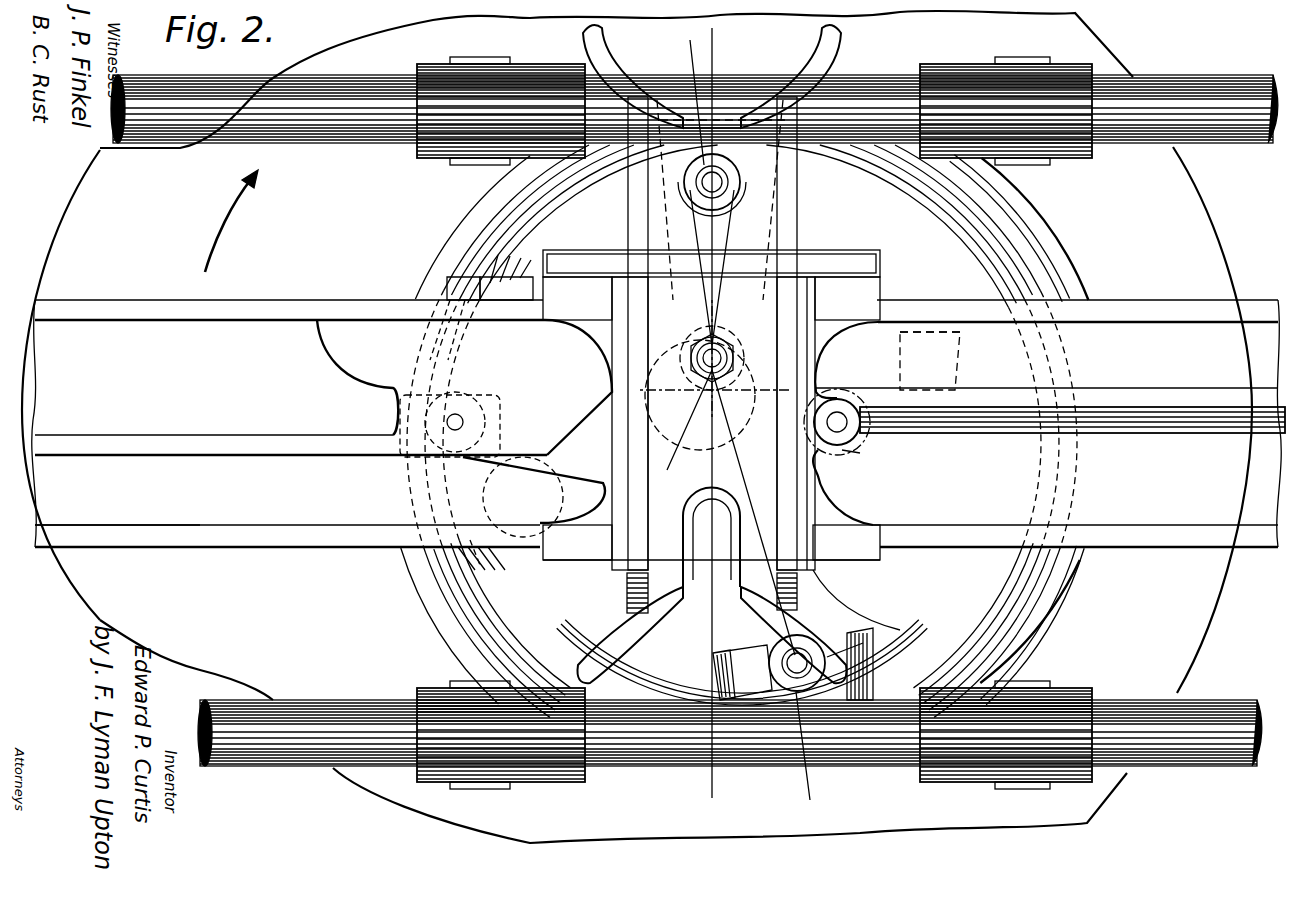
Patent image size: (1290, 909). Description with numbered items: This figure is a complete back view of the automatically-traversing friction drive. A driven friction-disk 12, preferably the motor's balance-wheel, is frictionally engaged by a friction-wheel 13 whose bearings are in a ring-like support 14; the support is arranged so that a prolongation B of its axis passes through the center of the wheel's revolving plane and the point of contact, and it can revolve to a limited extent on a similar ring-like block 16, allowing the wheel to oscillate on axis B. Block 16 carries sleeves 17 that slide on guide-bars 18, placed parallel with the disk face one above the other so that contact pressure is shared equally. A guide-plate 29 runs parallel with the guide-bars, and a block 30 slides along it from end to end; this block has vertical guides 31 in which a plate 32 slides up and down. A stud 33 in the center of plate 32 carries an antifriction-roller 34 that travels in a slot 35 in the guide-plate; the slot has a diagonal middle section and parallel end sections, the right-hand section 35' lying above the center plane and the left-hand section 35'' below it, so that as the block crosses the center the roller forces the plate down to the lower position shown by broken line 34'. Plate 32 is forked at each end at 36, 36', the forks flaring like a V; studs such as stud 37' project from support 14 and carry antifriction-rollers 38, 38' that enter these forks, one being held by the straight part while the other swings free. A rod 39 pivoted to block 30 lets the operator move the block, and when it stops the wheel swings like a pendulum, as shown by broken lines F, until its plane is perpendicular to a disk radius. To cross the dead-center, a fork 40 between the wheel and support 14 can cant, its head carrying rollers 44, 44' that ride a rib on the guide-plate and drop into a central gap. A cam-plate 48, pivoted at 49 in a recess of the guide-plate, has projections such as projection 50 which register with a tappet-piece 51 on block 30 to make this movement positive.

The driven friction-disk 12 is at (637, 427).
The friction-wheel 13 is at (800, 592).
The ring-like support 14 is at (470, 612).
The ring-like support or block 16 is at (1027, 232).
The sleeves 17 is at (975, 786).
The guide-bars 18 is at (1215, 710).
The guide-plate 29 is at (656, 423).
The block 30 is at (711, 405).
The vertical guides 31 is at (822, 378).
The plate 32 is at (662, 462).
The stud 33 is at (700, 368).
The antifriction-roller 34 is at (711, 388).
The broken-line lower position of roller 34' is at (425, 565).
The slot or recess 35 is at (537, 421).
The right-hand end section of slot 35' is at (931, 350).
The left-hand end section of slot 35'' is at (134, 504).
The slot or fork 36 is at (712, 95).
The slot or fork 36' is at (712, 586).
The stud 37' is at (793, 658).
The antifriction-roller 38 is at (764, 185).
The antifriction-roller 38' is at (853, 652).
The rod 39 is at (1072, 445).
The fork 40 is at (832, 572).
The antifriction-roller 44 is at (847, 423).
The antifriction-roller 44' is at (846, 447).
The cam-plate 48 is at (490, 500).
The pivot 49 is at (445, 428).
The projection 50 is at (440, 292).
The tappet-piece 51 is at (490, 283).
The axis B is at (773, 420).
The broken lines showing pendulum swing F is at (704, 428).